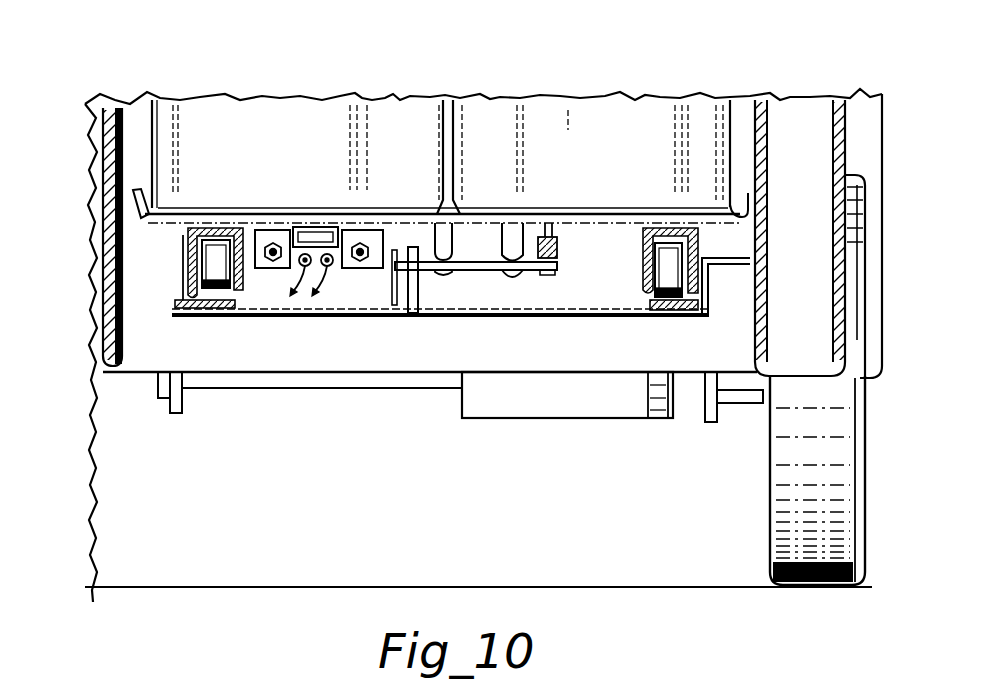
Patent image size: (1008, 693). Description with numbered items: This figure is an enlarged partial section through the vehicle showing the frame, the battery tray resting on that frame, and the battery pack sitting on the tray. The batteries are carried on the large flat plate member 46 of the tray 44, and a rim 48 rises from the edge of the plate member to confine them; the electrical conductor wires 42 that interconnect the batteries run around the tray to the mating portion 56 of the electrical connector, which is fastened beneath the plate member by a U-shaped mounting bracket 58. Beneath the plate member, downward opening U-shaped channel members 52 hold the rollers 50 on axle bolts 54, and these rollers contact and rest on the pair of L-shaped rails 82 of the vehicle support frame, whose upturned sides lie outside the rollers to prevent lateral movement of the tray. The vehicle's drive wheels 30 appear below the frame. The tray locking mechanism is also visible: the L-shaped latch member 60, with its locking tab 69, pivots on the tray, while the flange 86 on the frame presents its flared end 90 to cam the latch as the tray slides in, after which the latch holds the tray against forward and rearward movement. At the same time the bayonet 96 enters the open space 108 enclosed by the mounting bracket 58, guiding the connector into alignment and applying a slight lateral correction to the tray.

The wheels 30 is at (815, 443).
The electrical conductor wires 42 is at (303, 267).
The tray 44 is at (107, 108).
The plate member 46 is at (208, 217).
The rim 48 is at (130, 203).
The rollers 50 is at (208, 310).
The U-shaped channel members 52 is at (188, 245).
The axle bolts 54 is at (180, 303).
The mating portion of electrical connector 56 is at (262, 313).
The U-shaped mounting bracket 58 is at (353, 229).
The L-shaped latch member 60 is at (460, 270).
The locking tab 69 is at (393, 240).
The L-shaped rails 82 is at (186, 315).
The flange 86 is at (418, 297).
The flared end 90 is at (328, 267).
The bayonet 96 is at (328, 227).
The open space 108 is at (308, 227).